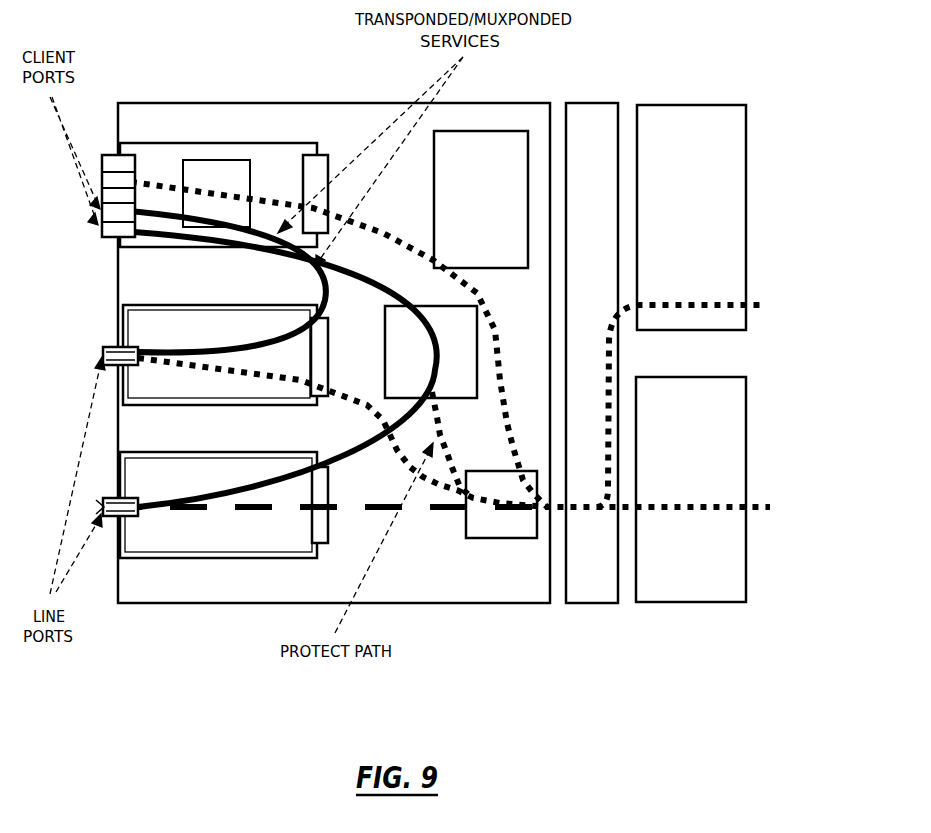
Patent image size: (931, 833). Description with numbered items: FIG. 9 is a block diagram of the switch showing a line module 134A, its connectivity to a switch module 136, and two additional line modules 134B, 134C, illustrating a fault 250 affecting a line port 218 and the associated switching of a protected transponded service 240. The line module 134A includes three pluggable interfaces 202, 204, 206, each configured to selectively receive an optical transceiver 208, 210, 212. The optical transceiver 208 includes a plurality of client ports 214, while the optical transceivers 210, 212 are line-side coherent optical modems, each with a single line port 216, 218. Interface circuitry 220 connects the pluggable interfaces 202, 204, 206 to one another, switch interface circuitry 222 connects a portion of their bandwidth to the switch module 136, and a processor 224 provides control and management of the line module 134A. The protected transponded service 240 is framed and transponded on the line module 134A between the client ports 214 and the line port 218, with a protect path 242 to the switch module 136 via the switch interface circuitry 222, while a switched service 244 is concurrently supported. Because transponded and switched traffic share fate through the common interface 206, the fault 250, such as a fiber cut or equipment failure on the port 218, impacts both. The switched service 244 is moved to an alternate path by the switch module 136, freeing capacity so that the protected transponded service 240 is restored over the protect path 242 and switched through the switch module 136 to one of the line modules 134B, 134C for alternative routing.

The line module 134A is at (522, 104).
The line module 134B is at (683, 105).
The line module 134C is at (700, 602).
The switch module 136 is at (602, 104).
The pluggable interface 202 is at (326, 152).
The pluggable interface 204 is at (330, 350).
The pluggable interface 206 is at (330, 490).
The optical transceiver 208 is at (150, 143).
The optical transceiver 210 is at (150, 304).
The optical transceiver 212 is at (150, 452).
The client ports 214 is at (107, 148).
The line port 216 is at (111, 344).
The line port 218 is at (108, 523).
The interface circuitry 220 is at (482, 352).
The switch interface circuitry 222 is at (490, 472).
The processor 224 is at (505, 270).
The protected transponded service 240 is at (352, 266).
The protect path 242 is at (445, 453).
The switched service 244 is at (371, 500).
The fault 250 is at (103, 504).